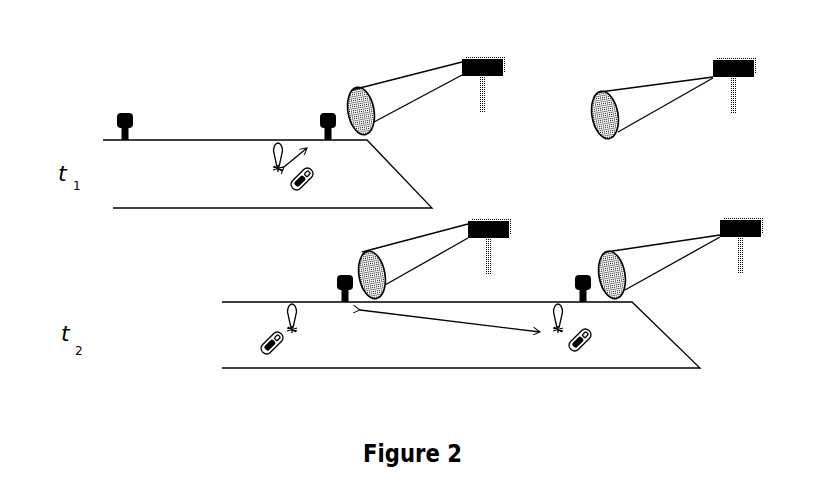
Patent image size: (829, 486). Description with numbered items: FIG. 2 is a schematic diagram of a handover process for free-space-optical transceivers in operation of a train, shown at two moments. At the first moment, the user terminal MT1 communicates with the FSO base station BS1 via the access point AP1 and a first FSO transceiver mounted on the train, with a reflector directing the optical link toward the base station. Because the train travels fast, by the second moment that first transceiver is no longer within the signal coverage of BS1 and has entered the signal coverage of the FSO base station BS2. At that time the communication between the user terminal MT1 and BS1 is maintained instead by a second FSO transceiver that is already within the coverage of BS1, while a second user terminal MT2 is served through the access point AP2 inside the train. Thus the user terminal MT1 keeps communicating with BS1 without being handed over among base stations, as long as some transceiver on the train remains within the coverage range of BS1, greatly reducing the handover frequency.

The FSO base station BS1 is at (487, 156).
The FSO base station BS2 is at (738, 156).
The access point AP1 is at (404, 238).
The access point AP2 is at (276, 318).
The user terminal MT1 is at (452, 262).
The user terminal MT2 is at (287, 344).